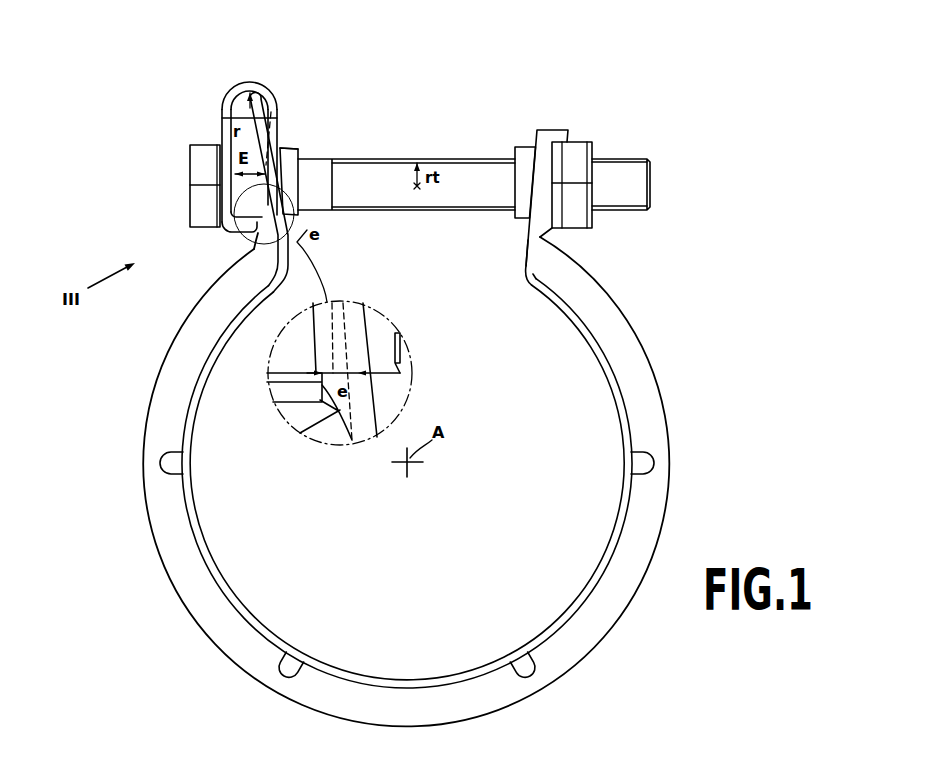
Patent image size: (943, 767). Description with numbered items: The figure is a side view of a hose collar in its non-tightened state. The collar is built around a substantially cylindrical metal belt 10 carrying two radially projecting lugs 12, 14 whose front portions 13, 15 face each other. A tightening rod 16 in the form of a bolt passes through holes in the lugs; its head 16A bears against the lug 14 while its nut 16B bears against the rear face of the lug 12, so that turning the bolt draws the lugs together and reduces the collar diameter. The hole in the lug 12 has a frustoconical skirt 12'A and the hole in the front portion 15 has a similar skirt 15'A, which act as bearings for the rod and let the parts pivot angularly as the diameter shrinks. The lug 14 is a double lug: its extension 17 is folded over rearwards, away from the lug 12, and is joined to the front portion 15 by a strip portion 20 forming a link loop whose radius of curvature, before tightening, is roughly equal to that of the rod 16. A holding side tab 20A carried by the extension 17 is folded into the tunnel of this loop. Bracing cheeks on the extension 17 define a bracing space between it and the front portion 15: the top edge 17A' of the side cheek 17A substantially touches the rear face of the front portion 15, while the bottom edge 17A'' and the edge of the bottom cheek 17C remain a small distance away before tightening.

The metal belt 10 is at (614, 305).
The lug 12 is at (550, 165).
The skirt 12'A is at (491, 250).
The front portion 13 is at (537, 138).
The lug 14 is at (272, 82).
The front portion 15 is at (312, 156).
The skirt 15'A is at (338, 137).
The tightening rod 16 is at (418, 223).
The head 16A is at (200, 153).
The nut 16B is at (573, 153).
The extension 17 is at (222, 125).
The side cheek 17A is at (195, 161).
The top edge 17A' is at (308, 113).
The bottom edge 17A'' is at (184, 219).
The bottom cheek 17C is at (247, 232).
The strip portion 20 is at (237, 82).
The holding side tab 20A is at (255, 97).